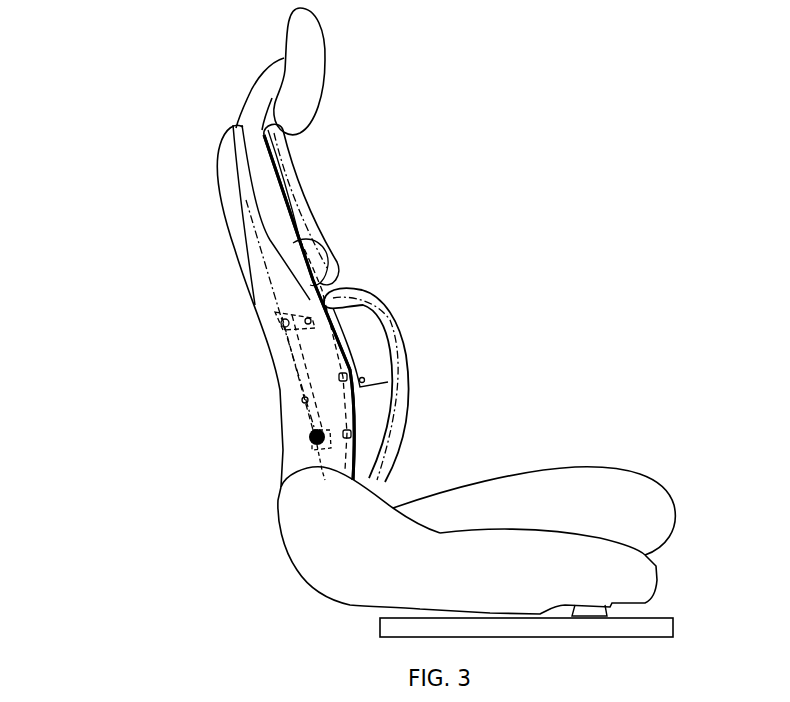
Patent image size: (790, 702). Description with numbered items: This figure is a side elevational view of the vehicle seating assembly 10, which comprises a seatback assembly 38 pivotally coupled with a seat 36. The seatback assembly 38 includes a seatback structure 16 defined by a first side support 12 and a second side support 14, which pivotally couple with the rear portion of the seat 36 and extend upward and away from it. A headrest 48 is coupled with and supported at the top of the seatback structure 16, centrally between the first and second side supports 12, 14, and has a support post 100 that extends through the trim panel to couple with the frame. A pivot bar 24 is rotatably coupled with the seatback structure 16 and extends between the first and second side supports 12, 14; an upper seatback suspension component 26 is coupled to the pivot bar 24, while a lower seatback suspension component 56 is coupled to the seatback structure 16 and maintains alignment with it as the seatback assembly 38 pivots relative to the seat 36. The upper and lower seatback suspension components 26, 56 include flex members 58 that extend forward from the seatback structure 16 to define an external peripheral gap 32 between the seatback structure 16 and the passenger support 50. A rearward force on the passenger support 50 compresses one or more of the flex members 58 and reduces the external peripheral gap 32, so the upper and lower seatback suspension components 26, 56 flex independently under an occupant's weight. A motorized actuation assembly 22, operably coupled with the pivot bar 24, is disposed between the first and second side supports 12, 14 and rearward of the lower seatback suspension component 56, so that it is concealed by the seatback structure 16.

The vehicle seating assembly 10 is at (158, 36).
The first side support 12 is at (237, 213).
The second side support 14 is at (237, 213).
The seatback structure 16 is at (225, 196).
The motorized actuation assembly 22 is at (290, 407).
The pivot bar 24 is at (278, 351).
The upper seatback suspension component 26 is at (268, 252).
The external peripheral gap 32 is at (317, 247).
The seat 36 is at (585, 510).
The seatback assembly 38 is at (440, 203).
The headrest 48 is at (310, 57).
The passenger support 50 is at (297, 165).
The lower seatback suspension component 56 is at (320, 361).
The flex members 58 is at (290, 228).
The support post 100 is at (253, 75).